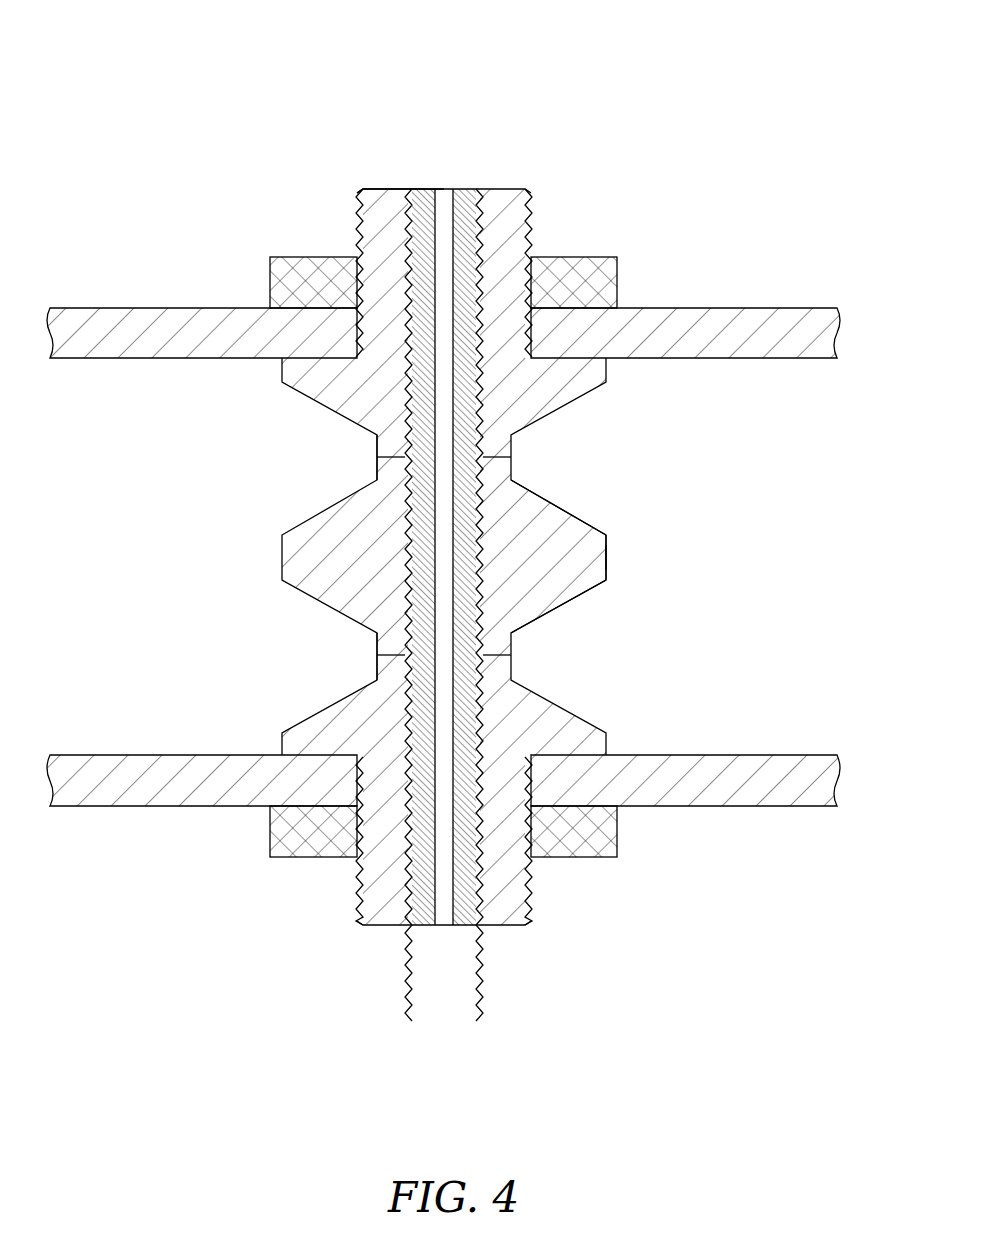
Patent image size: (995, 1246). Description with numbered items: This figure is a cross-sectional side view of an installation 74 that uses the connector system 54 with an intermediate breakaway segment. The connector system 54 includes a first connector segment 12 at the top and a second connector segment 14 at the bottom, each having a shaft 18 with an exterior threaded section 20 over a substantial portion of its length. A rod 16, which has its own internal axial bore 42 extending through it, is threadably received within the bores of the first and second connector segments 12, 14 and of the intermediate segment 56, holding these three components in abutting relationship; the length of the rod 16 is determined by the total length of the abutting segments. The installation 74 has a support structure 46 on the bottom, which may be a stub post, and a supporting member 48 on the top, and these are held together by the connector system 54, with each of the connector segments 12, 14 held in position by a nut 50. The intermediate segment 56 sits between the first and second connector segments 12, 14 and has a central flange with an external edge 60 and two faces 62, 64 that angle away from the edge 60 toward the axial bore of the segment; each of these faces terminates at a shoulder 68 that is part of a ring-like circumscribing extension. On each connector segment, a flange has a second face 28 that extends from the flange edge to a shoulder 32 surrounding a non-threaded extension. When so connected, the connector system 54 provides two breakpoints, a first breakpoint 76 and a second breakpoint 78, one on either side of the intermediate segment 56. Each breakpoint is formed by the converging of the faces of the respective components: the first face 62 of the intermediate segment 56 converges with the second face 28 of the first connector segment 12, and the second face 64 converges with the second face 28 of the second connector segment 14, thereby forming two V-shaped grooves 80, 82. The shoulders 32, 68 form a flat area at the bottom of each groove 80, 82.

The installation 74 is at (360, 113).
The first connector segment 12 is at (525, 185).
The exterior threaded section 20 is at (355, 232).
The shaft 18 is at (532, 232).
The second connector segment 14 is at (527, 930).
The rod 16 is at (468, 185).
The internal axial bore 42 is at (444, 187).
The supporting member 48 is at (725, 327).
The support structure 46 is at (725, 788).
The nut 50 is at (619, 252).
The second face 28 is at (578, 400).
The connector system 54 is at (726, 547).
The intermediate breakaway segment 56 is at (607, 535).
The external edge 60 is at (607, 555).
The first face 62 is at (558, 505).
The second face 64 is at (575, 608).
The shoulder 32 is at (375, 447).
The shoulder 68 is at (375, 470).
The first breakpoint 76 is at (519, 457).
The second breakpoint 78 is at (519, 655).
The V-shaped groove 80 is at (240, 444).
The V-shaped groove 82 is at (242, 663).